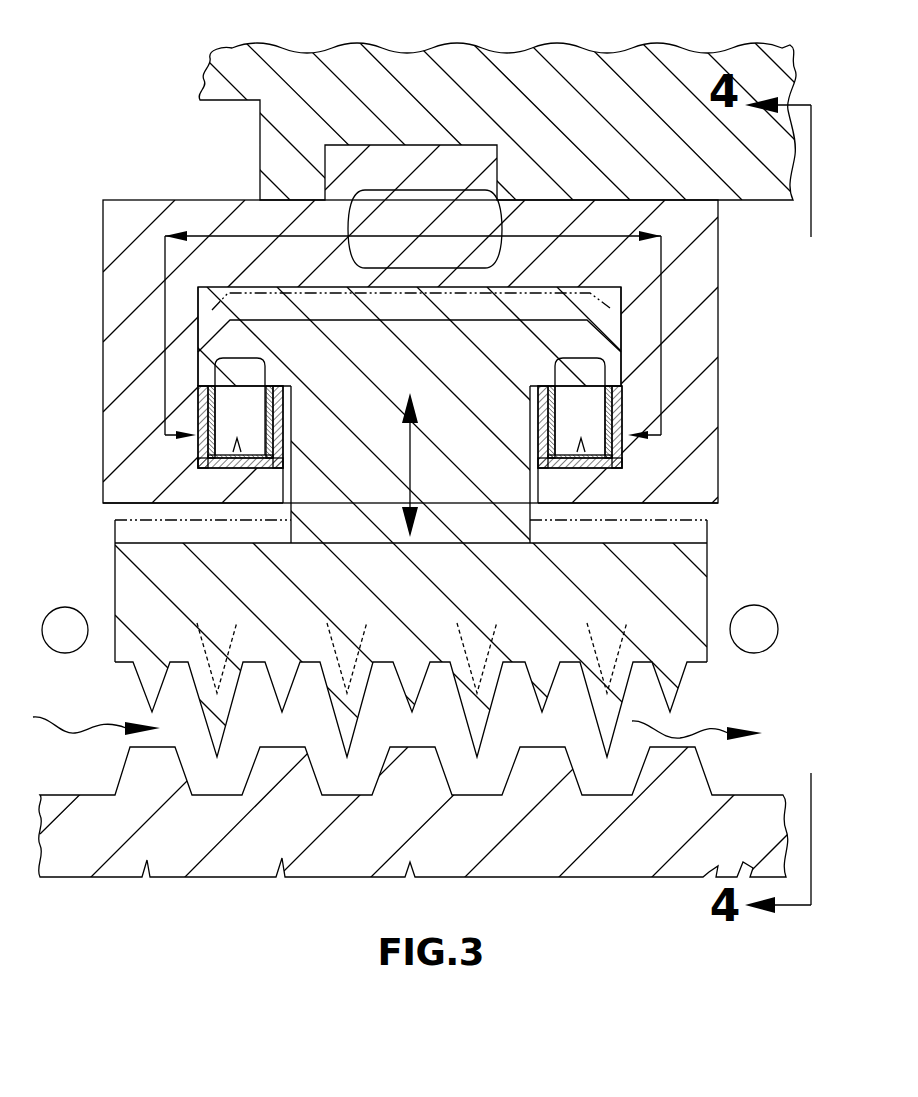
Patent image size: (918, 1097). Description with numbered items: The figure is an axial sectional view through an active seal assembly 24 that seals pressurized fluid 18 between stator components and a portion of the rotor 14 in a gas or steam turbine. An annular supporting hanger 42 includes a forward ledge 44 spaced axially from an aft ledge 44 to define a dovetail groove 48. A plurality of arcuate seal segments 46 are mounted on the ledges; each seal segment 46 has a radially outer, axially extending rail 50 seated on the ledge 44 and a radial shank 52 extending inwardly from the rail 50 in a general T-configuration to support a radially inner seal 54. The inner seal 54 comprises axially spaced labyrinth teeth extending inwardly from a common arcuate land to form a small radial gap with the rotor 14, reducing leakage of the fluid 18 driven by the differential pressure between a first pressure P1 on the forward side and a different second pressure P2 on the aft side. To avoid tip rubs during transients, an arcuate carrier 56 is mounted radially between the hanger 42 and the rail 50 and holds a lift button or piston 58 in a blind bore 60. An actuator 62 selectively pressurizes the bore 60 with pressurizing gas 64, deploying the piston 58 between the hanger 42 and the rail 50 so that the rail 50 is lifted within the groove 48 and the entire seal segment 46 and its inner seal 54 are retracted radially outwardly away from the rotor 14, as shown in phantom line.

The rotor 14 is at (447, 842).
The pressurized fluid 18 is at (78, 733).
The seal assembly 24 is at (126, 152).
The hanger 42 is at (103, 285).
The ledge 44 is at (252, 493).
The seal segment 46 is at (732, 576).
The dovetail groove 48 is at (540, 314).
The rail 50 is at (283, 320).
The shank 52 is at (467, 458).
The inner seal 54 is at (680, 683).
The carrier 56 is at (283, 413).
The piston 58 is at (243, 388).
The bore 60 is at (237, 445).
The actuator 62 is at (437, 190).
The pressurizing gas 64 is at (163, 405).
The first pressure P1 is at (65, 630).
The second pressure P2 is at (754, 629).